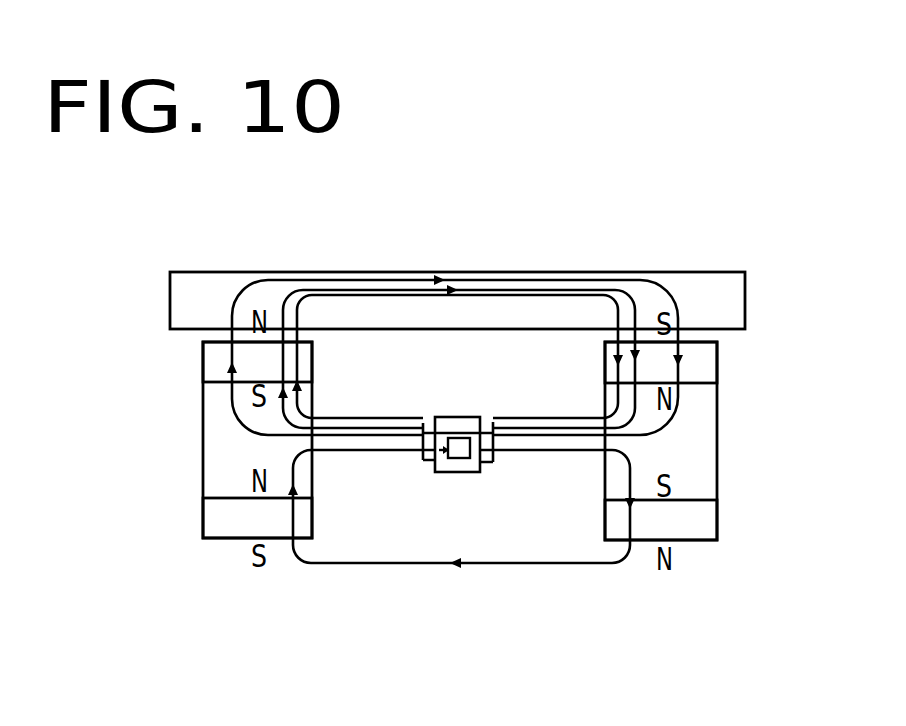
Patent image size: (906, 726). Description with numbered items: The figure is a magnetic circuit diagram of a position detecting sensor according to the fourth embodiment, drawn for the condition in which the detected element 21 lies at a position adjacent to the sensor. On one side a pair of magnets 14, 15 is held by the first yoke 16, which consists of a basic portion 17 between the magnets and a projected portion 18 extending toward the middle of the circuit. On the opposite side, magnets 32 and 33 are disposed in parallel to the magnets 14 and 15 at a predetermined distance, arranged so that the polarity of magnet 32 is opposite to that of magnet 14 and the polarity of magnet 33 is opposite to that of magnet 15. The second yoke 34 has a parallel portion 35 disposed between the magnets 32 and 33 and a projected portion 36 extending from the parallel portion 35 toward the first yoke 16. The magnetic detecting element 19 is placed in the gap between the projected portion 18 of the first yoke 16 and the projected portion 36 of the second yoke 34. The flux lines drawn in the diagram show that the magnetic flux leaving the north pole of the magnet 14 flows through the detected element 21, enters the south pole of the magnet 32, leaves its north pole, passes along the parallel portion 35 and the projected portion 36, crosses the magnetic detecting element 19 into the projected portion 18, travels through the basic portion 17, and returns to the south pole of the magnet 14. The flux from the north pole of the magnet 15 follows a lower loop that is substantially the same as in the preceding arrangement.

The magnet 14 is at (203, 366).
The magnet 15 is at (203, 522).
The first yoke 16 is at (335, 397).
The basic portion 17 is at (203, 452).
The projected portion 18 is at (372, 424).
The magnetic detecting element 19 is at (455, 462).
The detected element 21 is at (697, 285).
The magnet 32 is at (704, 357).
The magnet 33 is at (704, 522).
The second yoke 34 is at (589, 410).
The parallel portion 35 is at (703, 437).
The projected portion 36 is at (570, 455).